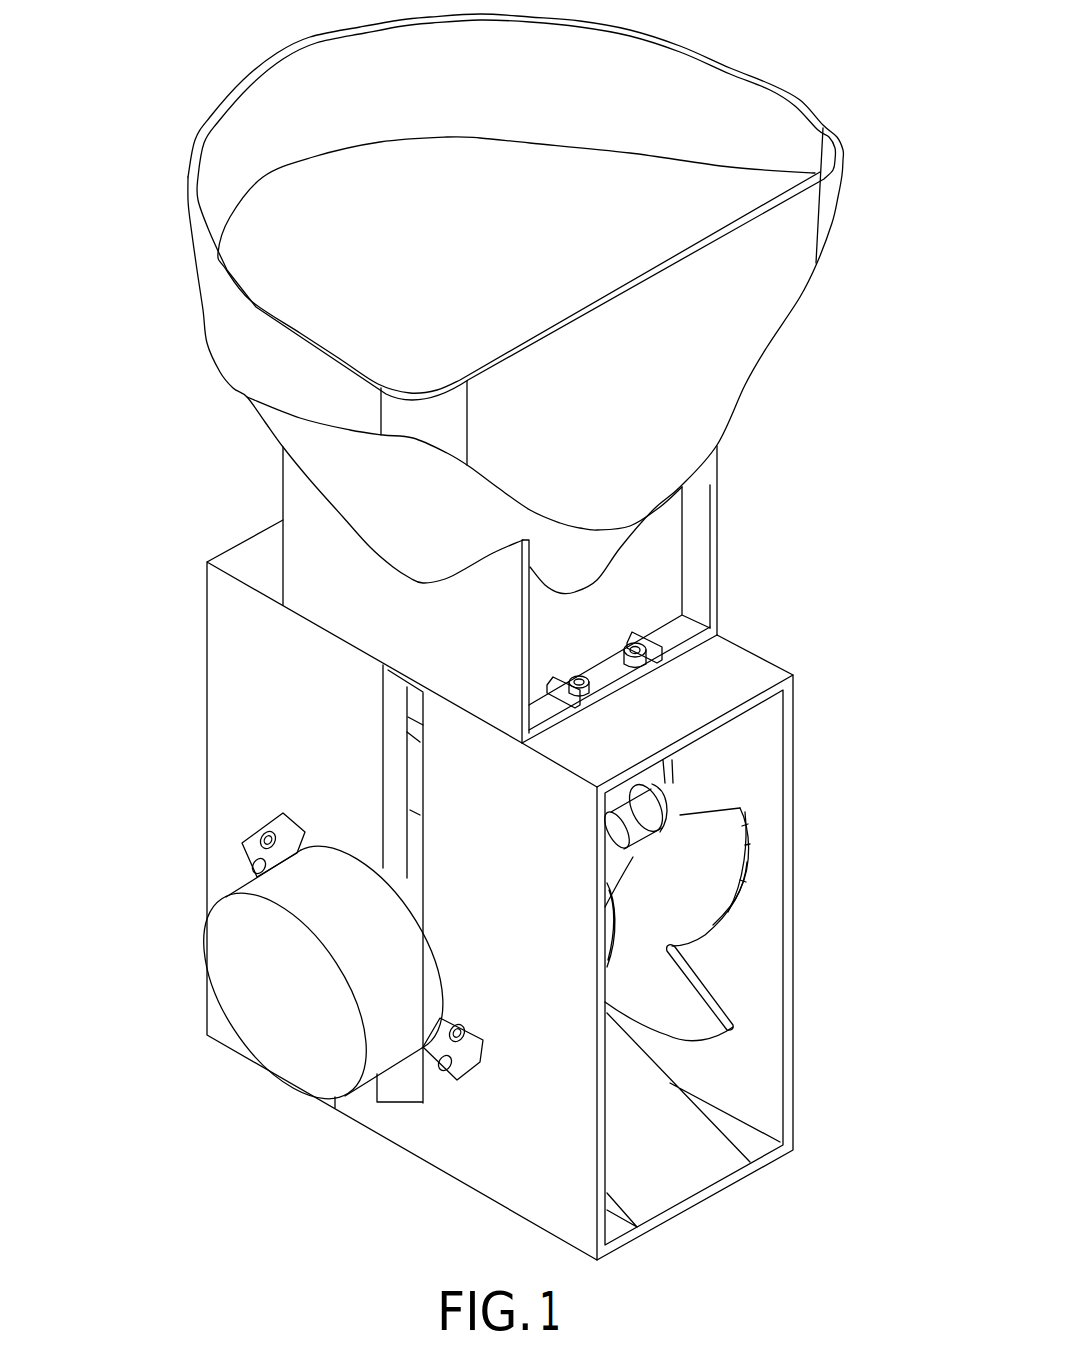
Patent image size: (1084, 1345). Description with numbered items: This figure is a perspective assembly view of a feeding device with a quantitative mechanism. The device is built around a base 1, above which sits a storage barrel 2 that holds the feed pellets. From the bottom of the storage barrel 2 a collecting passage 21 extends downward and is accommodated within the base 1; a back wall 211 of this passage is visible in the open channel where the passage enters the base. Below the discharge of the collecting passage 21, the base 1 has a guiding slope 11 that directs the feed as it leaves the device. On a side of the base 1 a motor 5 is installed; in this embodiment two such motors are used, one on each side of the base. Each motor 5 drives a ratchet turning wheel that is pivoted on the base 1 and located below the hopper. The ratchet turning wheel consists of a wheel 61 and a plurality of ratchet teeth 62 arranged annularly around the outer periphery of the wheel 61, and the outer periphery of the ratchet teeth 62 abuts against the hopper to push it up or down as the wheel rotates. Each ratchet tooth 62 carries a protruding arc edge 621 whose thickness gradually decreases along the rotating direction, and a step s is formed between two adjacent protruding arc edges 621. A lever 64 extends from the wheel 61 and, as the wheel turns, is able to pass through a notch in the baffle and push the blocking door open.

The base 1 is at (794, 1062).
The guiding slope 11 is at (670, 1162).
The storage barrel 2 is at (770, 251).
The collecting passage 21 is at (673, 545).
The channel back wall 211 is at (668, 590).
The motor 5 is at (280, 1007).
The wheel 61 is at (627, 942).
The ratchet teeth 62 is at (690, 890).
The protruding arc edge 621 is at (747, 857).
The lever 64 is at (635, 813).
The step s is at (690, 813).